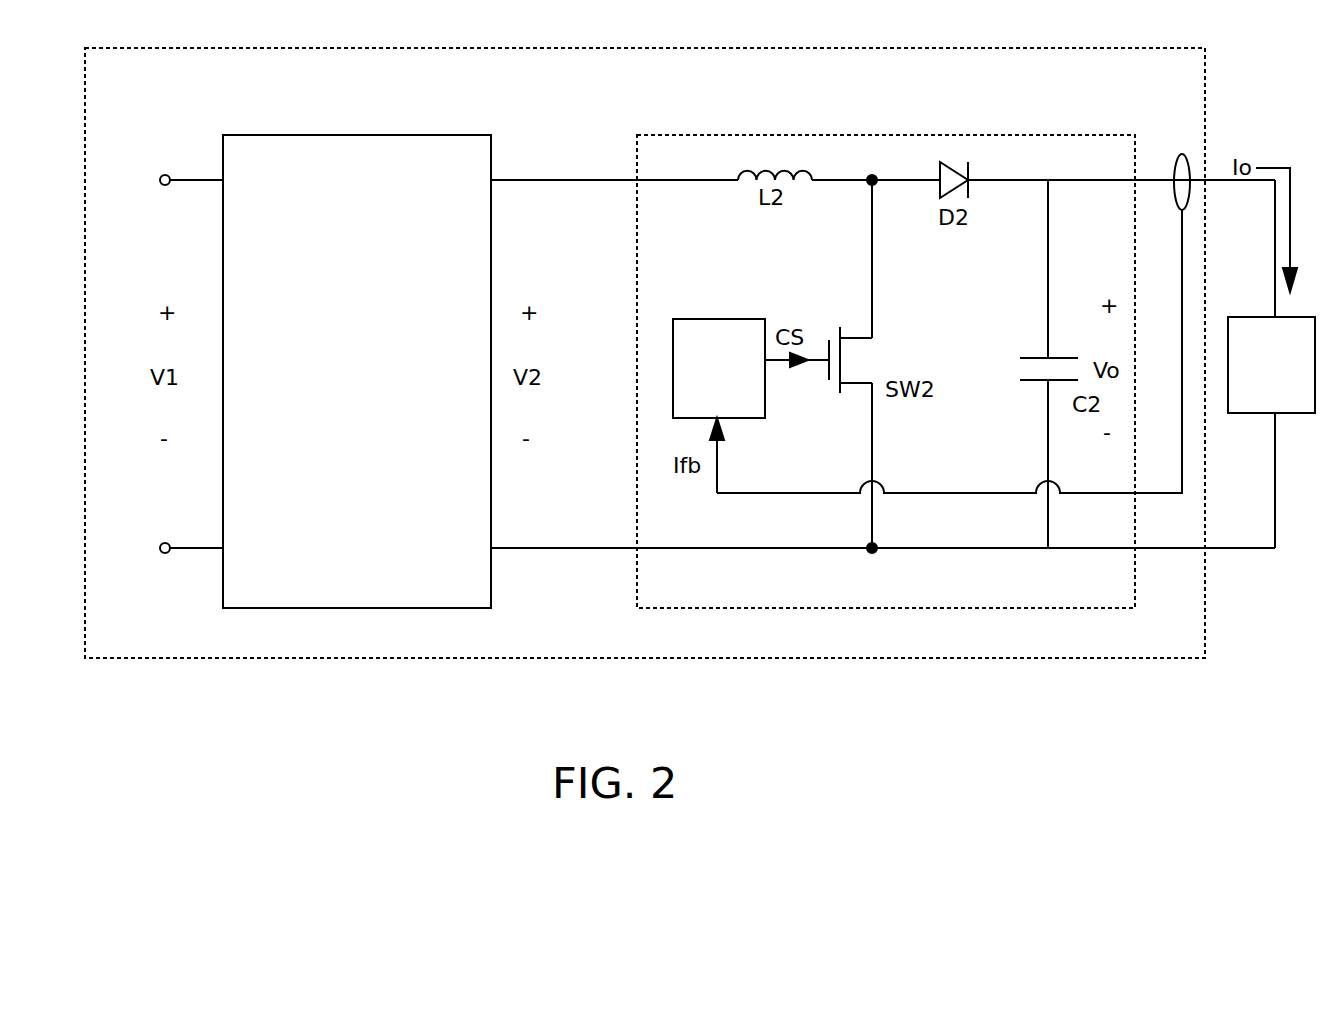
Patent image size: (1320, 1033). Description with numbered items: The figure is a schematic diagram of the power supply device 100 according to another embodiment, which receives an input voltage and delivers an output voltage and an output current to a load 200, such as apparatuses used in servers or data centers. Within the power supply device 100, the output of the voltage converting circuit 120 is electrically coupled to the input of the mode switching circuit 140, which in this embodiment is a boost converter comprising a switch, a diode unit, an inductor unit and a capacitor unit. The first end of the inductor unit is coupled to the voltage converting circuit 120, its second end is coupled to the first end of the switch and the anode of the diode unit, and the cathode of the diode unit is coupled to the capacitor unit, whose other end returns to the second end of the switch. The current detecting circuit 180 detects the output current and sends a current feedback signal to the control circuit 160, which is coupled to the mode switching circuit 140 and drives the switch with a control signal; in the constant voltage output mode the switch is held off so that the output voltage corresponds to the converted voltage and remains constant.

The power supply device 100 is at (585, 47).
The voltage converting circuit 120 is at (357, 371).
The mode switching circuit 140 is at (820, 135).
The control circuit 160 is at (741, 380).
The current detecting circuit 180 is at (1185, 156).
The load 200 is at (1293, 377).